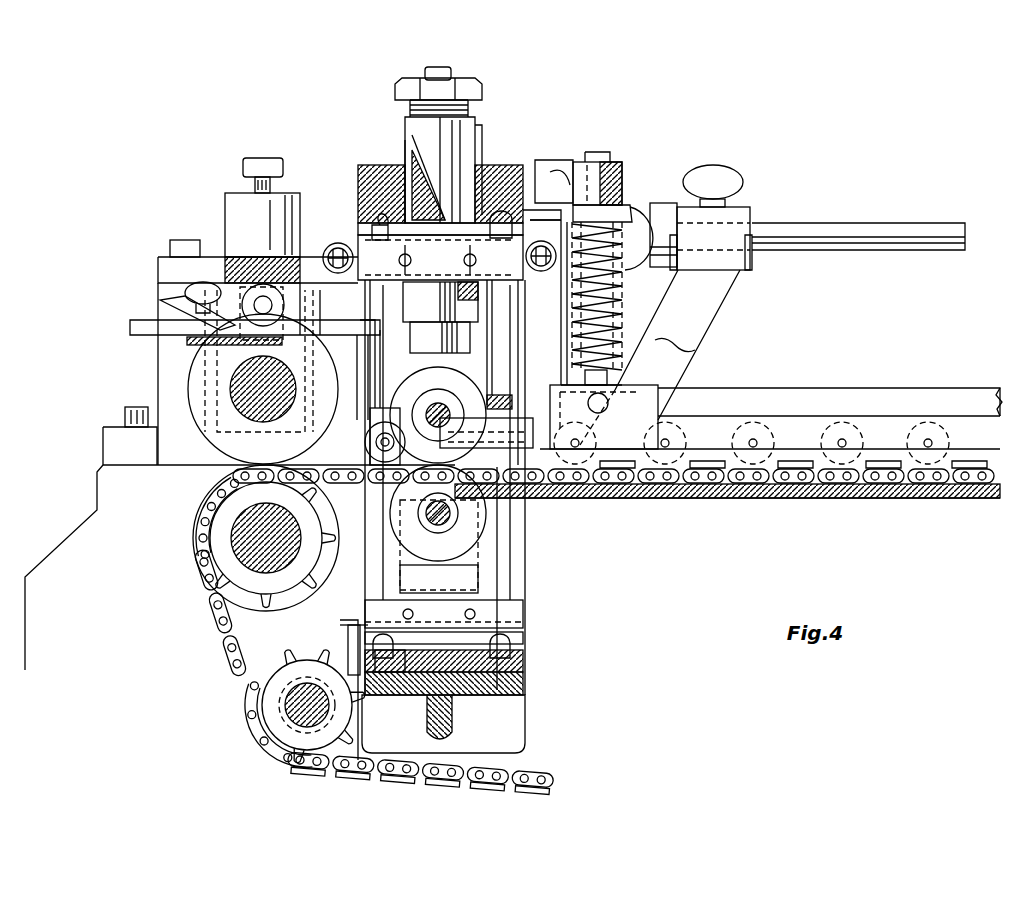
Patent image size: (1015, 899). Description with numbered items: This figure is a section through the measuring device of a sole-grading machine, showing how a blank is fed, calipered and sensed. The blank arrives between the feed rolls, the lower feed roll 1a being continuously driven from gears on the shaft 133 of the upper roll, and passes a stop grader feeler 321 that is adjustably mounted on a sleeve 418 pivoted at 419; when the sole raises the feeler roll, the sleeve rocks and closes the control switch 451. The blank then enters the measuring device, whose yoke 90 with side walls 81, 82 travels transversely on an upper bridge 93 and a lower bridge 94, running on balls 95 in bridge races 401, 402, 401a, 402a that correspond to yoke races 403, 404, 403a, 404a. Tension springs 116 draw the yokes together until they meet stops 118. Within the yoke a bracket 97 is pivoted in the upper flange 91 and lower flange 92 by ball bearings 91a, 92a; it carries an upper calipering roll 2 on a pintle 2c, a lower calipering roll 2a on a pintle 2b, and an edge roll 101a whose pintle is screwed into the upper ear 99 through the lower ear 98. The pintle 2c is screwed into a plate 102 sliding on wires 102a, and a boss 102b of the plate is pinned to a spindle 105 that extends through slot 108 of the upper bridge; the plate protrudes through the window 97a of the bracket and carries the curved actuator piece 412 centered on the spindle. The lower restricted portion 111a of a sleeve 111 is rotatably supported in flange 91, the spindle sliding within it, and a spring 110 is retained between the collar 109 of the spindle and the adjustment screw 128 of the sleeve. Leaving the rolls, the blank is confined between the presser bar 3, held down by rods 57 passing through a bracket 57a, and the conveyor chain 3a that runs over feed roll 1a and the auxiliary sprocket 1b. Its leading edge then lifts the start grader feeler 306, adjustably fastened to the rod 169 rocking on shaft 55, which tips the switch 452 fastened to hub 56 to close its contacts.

The spindle 105 is at (424, 73).
The adjustment screw 128 is at (470, 88).
The spring 110 is at (412, 112).
The sleeve 111 is at (472, 122).
The lower restricted portion of sleeve 111a is at (478, 150).
The collar 109 is at (412, 150).
The slot 108 is at (405, 165).
The bridge race 401a is at (365, 198).
The yoke race 403a is at (372, 232).
The upper bridge 93 is at (500, 238).
The balls 95 is at (510, 225).
The ball bearing 91a is at (384, 261).
The upper flange of yoke 91 is at (487, 261).
The tension spring 116 is at (323, 258).
The yoke race 404a is at (548, 243).
The bridge race 402a is at (556, 205).
The side wall 81 is at (365, 298).
The yoke 90 is at (354, 320).
The control switch 451 is at (185, 285).
The feeler sleeve 418 is at (230, 325).
The pivot 419 is at (258, 316).
The shaft of upper feed roll 133 is at (243, 383).
The stop grader feeler 321 is at (368, 447).
The pintle 2c is at (400, 398).
The upper calipering roll 2 is at (395, 443).
The window of bracket 97a is at (482, 292).
The side wall 82 is at (480, 312).
The slide plate 102 is at (472, 332).
The boss 102b is at (438, 415).
The upper ear of bracket 99 is at (512, 405).
The lower calipering roll 2a is at (438, 514).
The pintle 2b is at (428, 522).
The bracket 97 is at (470, 578).
The lower flange of yoke 92 is at (492, 612).
The ball bearing 92a is at (500, 616).
The yoke race 404 is at (523, 640).
The yoke race 403 is at (370, 640).
The bridge race 401 is at (378, 655).
The bridge race 402 is at (525, 665).
The lower bridge 94 is at (452, 720).
The hub 56 is at (624, 270).
The wire 102a is at (624, 318).
The switch 452 is at (626, 175).
The rod 57 is at (600, 160).
The bracket 57a is at (627, 178).
The shaft 55 is at (630, 210).
The rod 169 is at (797, 225).
The start grader feeler 306 is at (665, 362).
The presser bar 3 is at (845, 412).
The lower ear of bracket 98 is at (230, 490).
The actuator piece 412 is at (535, 492).
The conveyor chain 3a is at (896, 498).
The edge roll 101a is at (520, 528).
The lower feed roll 1a is at (200, 578).
The auxiliary sprocket 1b is at (262, 708).
The stop 118 is at (352, 742).